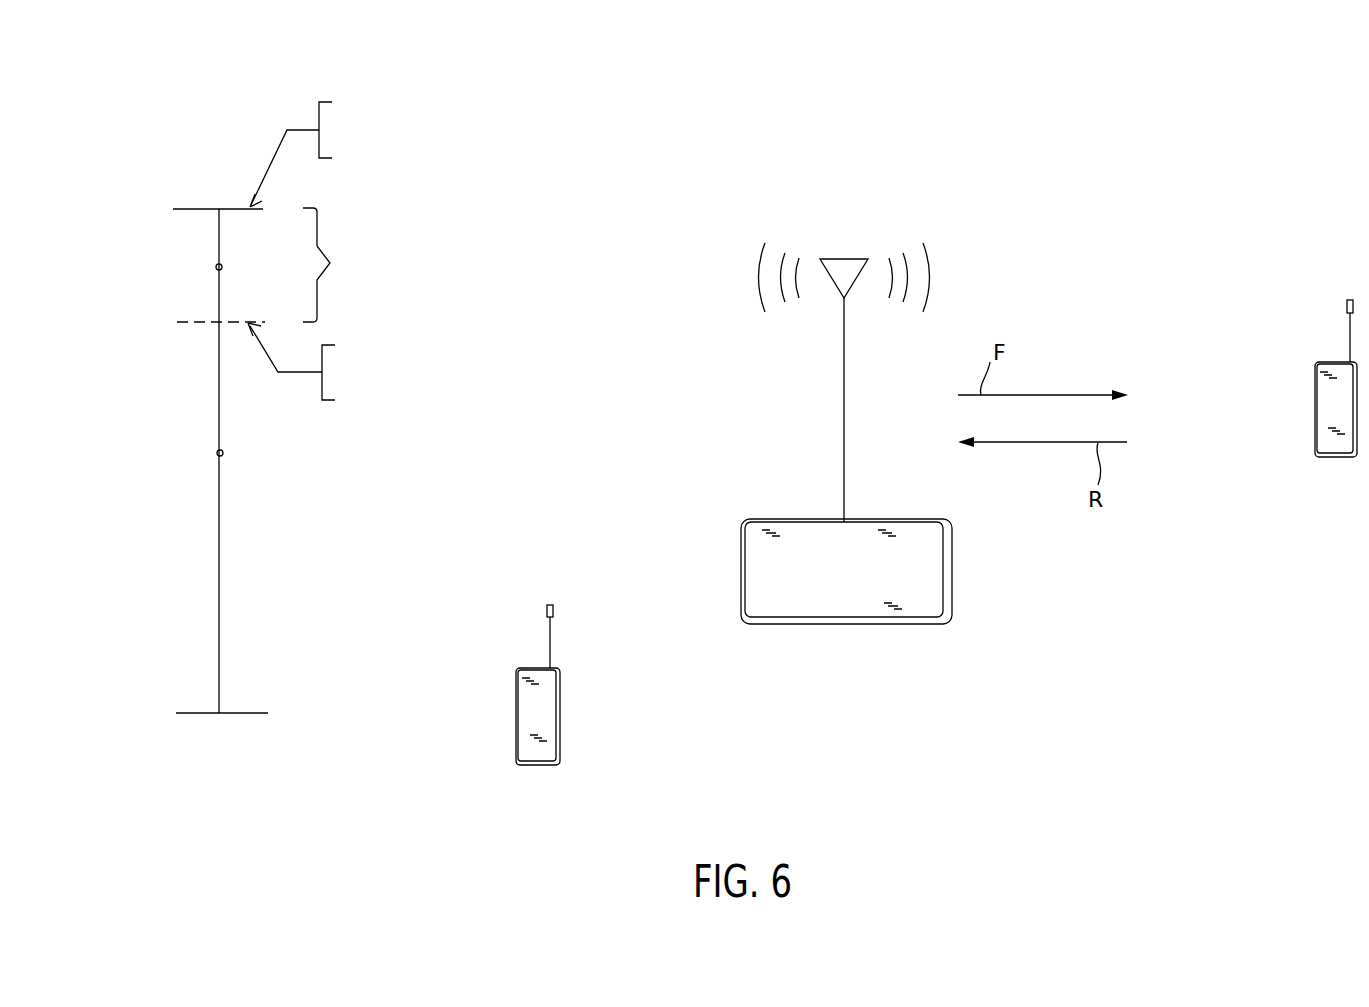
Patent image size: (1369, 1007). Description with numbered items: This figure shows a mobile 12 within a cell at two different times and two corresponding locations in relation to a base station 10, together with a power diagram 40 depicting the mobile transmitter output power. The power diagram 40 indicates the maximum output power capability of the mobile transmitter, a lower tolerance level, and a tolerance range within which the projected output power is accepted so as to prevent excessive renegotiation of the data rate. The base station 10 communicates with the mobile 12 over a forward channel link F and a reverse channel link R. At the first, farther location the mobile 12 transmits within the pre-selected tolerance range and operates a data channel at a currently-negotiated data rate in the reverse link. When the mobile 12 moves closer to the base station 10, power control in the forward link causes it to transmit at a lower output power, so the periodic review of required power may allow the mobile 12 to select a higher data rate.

The power diagram 40 is at (170, 112).
The base station 10 is at (741, 557).
The mobile 12 is at (560, 713).